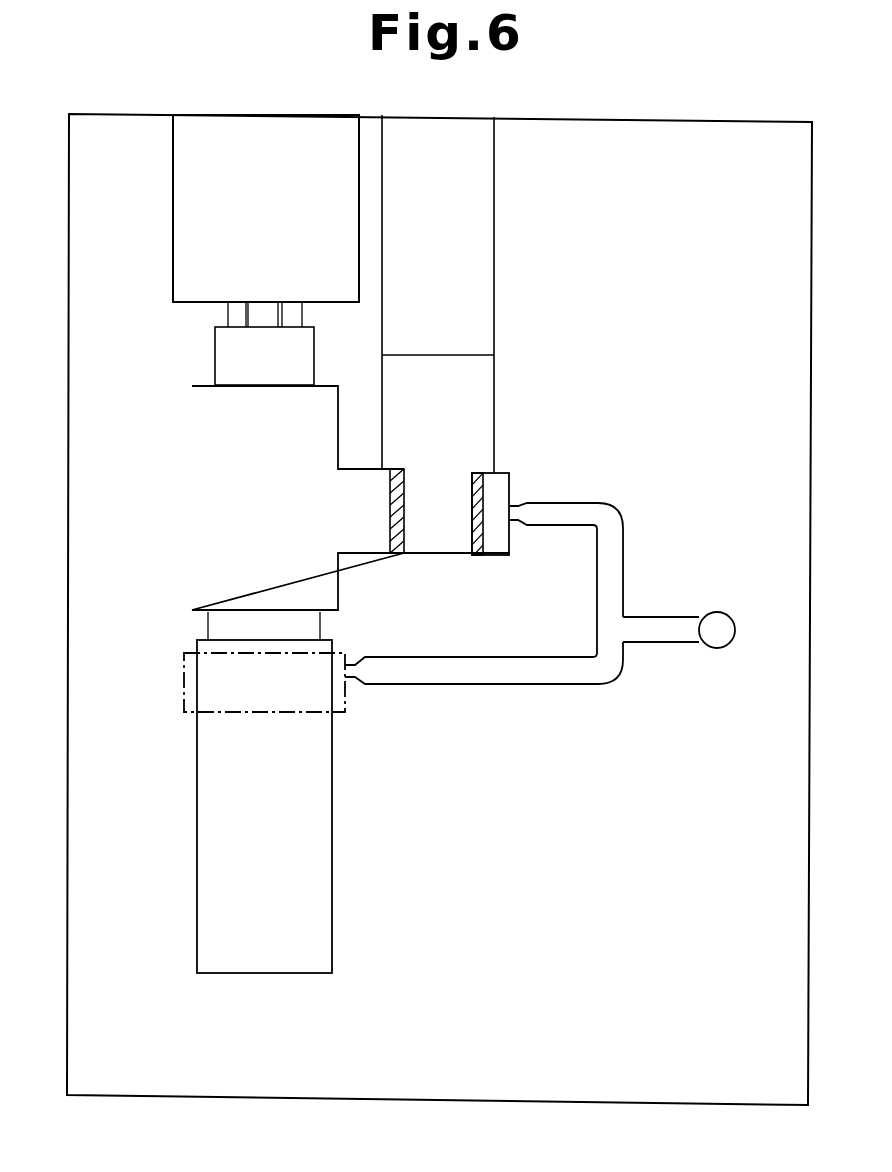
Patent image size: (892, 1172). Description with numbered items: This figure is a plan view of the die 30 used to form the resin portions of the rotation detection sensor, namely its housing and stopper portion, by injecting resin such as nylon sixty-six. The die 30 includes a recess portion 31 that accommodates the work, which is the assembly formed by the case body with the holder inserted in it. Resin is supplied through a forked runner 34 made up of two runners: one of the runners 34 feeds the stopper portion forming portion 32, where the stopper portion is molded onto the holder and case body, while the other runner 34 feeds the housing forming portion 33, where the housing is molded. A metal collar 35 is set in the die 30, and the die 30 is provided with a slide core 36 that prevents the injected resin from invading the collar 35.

The die 30 is at (601, 121).
The recess portion 31 is at (333, 773).
The stopper portion forming portion 32 is at (184, 680).
The housing forming portion 33 is at (191, 465).
The runner 34 is at (623, 577).
The collar 35 is at (396, 555).
The slide core 36 is at (453, 485).